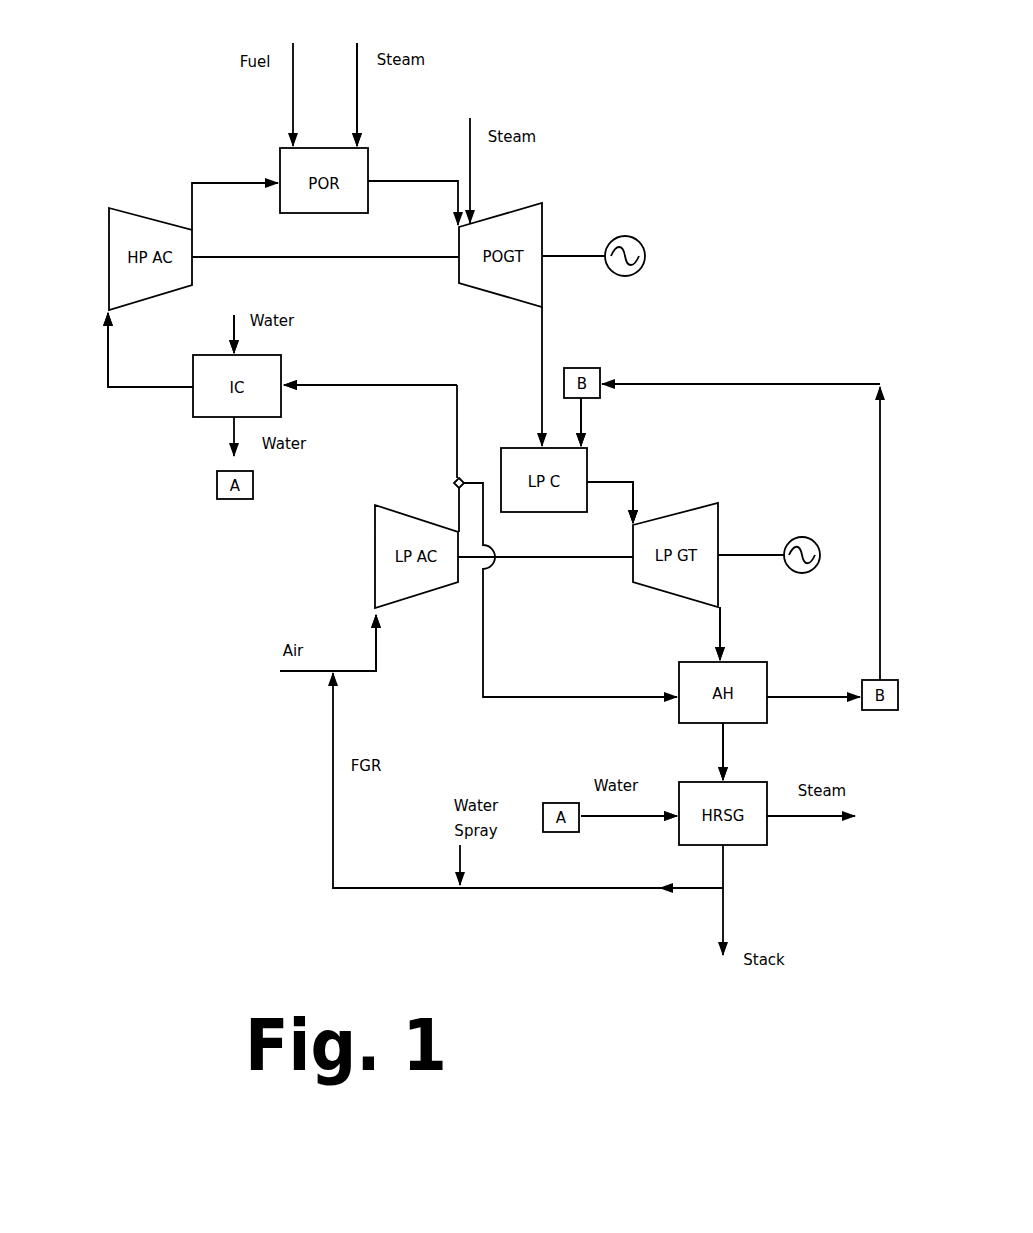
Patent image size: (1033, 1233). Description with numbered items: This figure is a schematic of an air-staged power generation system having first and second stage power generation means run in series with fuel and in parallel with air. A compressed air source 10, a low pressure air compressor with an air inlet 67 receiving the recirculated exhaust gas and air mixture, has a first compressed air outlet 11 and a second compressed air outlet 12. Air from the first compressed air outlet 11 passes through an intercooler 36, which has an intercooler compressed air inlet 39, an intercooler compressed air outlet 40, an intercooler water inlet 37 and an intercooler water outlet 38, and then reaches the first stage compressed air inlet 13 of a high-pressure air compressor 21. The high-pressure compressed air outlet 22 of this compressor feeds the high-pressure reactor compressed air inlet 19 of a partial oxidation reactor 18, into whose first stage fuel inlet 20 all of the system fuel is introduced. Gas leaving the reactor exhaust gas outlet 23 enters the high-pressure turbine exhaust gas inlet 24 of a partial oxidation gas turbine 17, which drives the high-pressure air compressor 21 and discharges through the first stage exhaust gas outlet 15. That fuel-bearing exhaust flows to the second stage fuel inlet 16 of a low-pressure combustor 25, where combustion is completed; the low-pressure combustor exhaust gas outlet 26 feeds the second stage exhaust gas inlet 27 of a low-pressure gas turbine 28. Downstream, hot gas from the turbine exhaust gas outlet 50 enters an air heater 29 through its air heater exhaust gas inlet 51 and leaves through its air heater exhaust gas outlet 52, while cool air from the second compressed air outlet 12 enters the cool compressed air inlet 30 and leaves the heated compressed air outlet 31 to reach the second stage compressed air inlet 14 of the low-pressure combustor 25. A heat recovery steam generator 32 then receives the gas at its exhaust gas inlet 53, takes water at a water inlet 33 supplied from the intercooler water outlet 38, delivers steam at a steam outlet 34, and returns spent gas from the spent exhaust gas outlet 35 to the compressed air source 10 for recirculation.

The compressed air source 10 is at (375, 518).
The first compressed air outlet 11 is at (454, 483).
The second compressed air outlet 12 is at (460, 465).
The first stage compressed air inlet 13 is at (102, 312).
The second stage compressed air inlet 14 is at (583, 445).
The first stage exhaust gas outlet 15 is at (544, 306).
The second stage fuel inlet 16 is at (540, 447).
The partial oxidation gas turbine 17 is at (542, 205).
The partial oxidation reactor 18 is at (368, 155).
The high-pressure reactor compressed air inlet 19 is at (280, 178).
The first stage fuel inlet 20 is at (285, 148).
The high-pressure air compressor 21 is at (125, 207).
The high-pressure compressed air outlet 22 is at (192, 228).
The reactor exhaust gas outlet 23 is at (368, 195).
The high-pressure turbine exhaust gas inlet 24 is at (464, 226).
The low-pressure combustor 25 is at (587, 458).
The low-pressure combustor exhaust gas outlet 26 is at (587, 492).
The second stage exhaust gas inlet 27 is at (633, 527).
The low-pressure gas turbine 28 is at (718, 510).
The air heater 29 is at (770, 663).
The cool compressed air inlet 30 is at (679, 700).
The heated compressed air outlet 31 is at (768, 705).
The heat recovery steam generator 32 is at (768, 830).
The water inlet 33 is at (679, 830).
The steam outlet 34 is at (768, 800).
The spent exhaust gas outlet 35 is at (725, 855).
The intercooler 36 is at (190, 405).
The intercooler water inlet 37 is at (248, 350).
The intercooler water outlet 38 is at (228, 420).
The intercooler compressed air inlet 39 is at (282, 395).
The intercooler compressed air outlet 40 is at (193, 380).
The turbine exhaust gas outlet 50 is at (720, 607).
The air heater exhaust gas inlet 51 is at (725, 657).
The air heater exhaust gas outlet 52 is at (725, 735).
The exhaust gas inlet 53 is at (720, 775).
The air inlet 67 is at (378, 608).